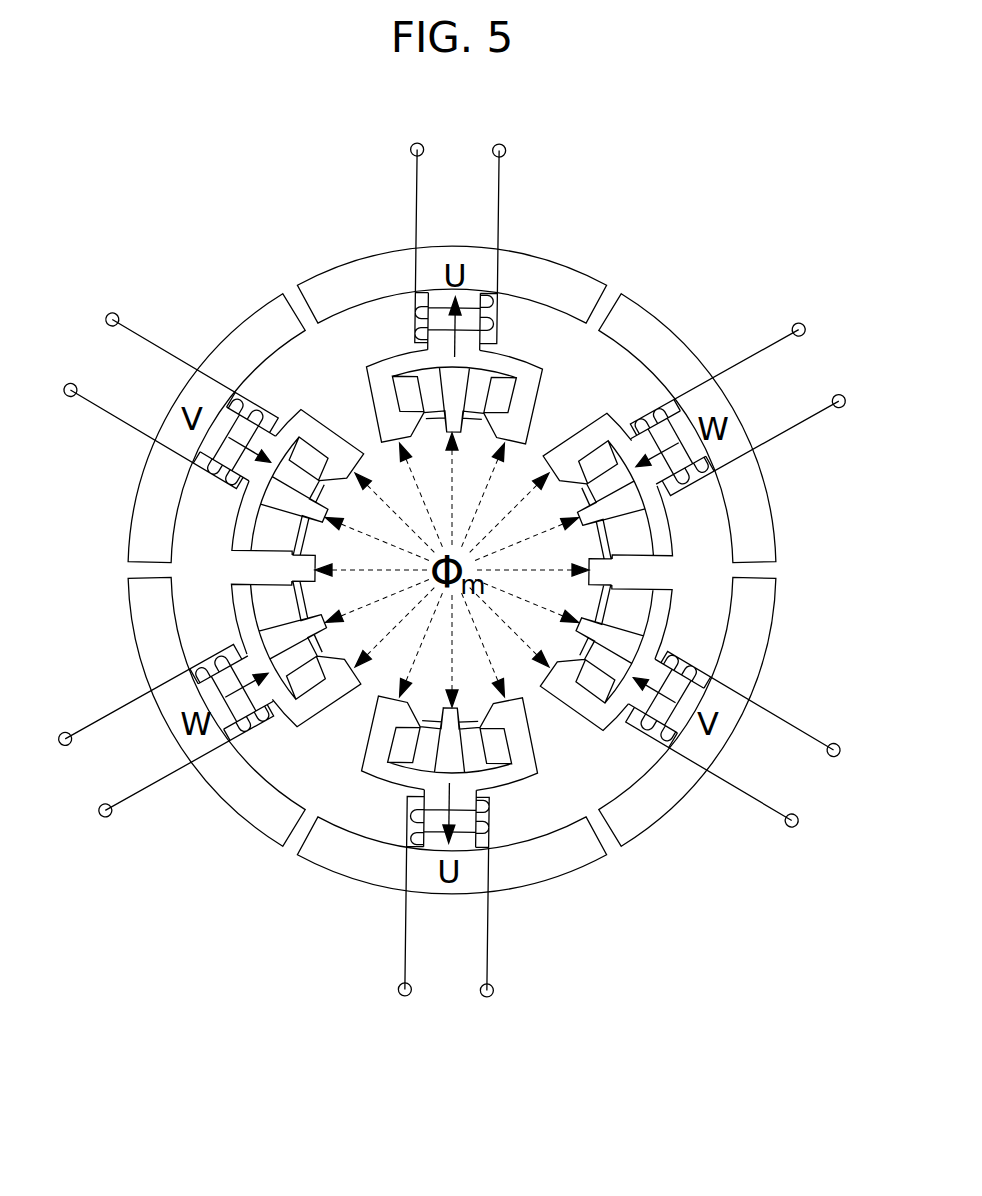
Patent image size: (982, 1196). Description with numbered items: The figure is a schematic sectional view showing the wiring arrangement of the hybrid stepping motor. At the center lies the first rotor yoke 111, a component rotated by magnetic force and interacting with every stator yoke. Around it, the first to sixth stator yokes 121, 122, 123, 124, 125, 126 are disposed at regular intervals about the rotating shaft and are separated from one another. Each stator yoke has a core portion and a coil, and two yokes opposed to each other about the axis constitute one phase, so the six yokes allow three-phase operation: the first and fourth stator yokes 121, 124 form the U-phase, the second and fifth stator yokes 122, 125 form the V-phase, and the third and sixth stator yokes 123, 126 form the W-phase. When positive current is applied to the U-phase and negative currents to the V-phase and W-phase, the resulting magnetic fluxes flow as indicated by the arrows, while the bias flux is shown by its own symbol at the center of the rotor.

The first rotor yoke 111 is at (293, 568).
The first stator yoke 121 is at (548, 270).
The second stator yoke 122 is at (260, 320).
The third stator yoke 123 is at (142, 608).
The fourth stator yoke 124 is at (556, 872).
The fifth stator yoke 125 is at (745, 622).
The sixth stator yoke 126 is at (655, 330).